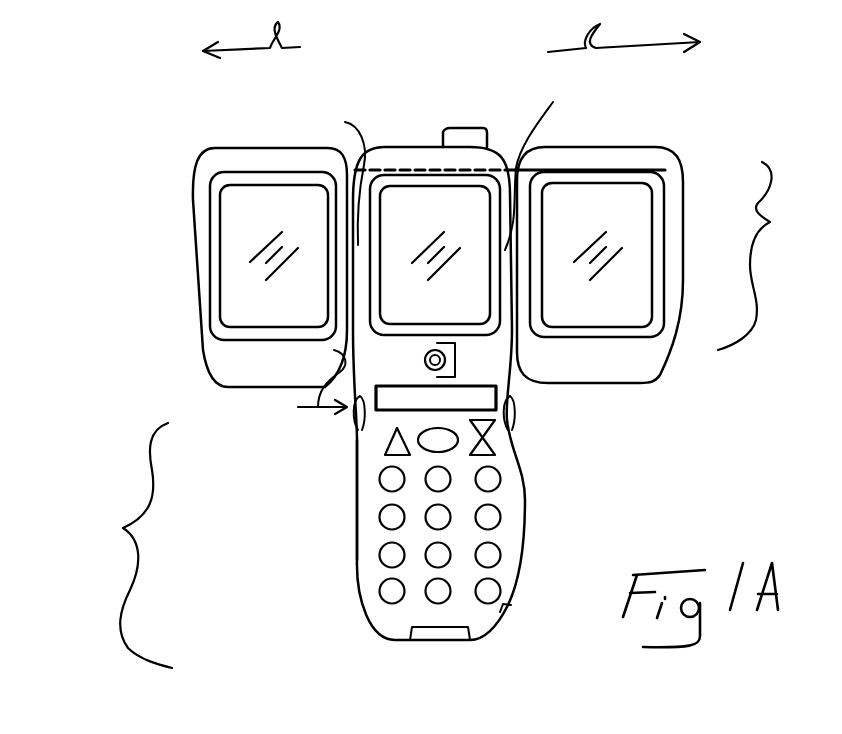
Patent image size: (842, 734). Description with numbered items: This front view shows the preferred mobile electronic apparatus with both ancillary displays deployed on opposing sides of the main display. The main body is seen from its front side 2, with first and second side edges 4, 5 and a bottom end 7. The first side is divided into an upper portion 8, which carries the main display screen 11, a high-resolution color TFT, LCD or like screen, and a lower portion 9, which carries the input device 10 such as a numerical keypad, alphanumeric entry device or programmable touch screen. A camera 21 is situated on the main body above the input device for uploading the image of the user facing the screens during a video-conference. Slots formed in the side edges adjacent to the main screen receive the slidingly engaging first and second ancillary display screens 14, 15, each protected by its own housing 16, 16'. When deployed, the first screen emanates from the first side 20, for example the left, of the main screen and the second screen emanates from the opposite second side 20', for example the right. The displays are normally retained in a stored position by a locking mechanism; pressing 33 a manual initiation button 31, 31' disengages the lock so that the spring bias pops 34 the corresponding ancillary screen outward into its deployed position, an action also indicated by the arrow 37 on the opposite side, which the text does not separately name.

The bottom end 7 is at (434, 37).
The opening direction arrow (left) 37 is at (251, 29).
The pop 34 is at (624, 26).
The front side 2 is at (510, 536).
The first side edge 4 is at (350, 510).
The main display screen 11 is at (422, 210).
The housing 16 is at (270, 237).
The housing 16' is at (630, 280).
The first ancillary display screen 14 is at (292, 312).
The second ancillary display screen 15 is at (628, 207).
The first side 20 is at (332, 178).
The second side 20' is at (556, 154).
The upper portion 8 is at (760, 256).
The lower portion 9 is at (129, 545).
The pressing 33 is at (322, 381).
The manual initiation button 31 is at (307, 453).
The manual initiation button 31' is at (580, 420).
The camera 21 is at (497, 393).
The second side edge 5 is at (525, 477).
The input device 10 is at (503, 607).